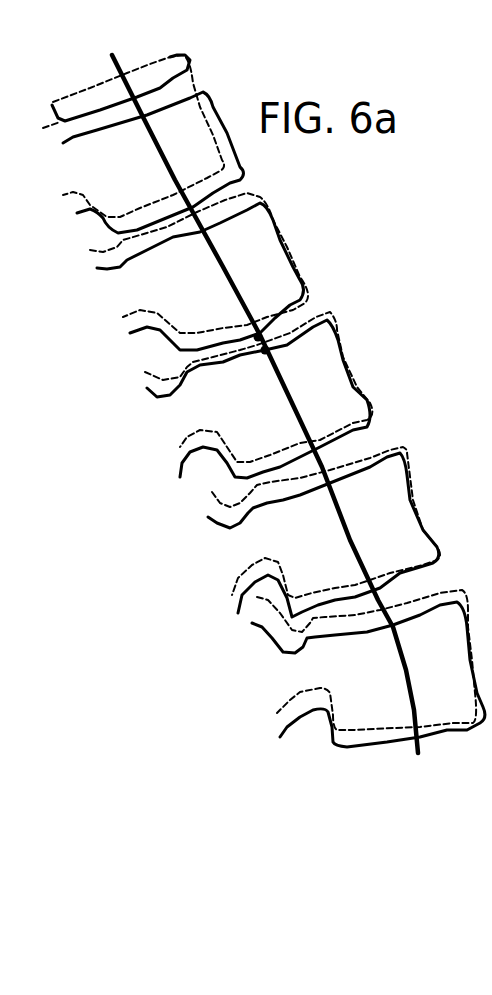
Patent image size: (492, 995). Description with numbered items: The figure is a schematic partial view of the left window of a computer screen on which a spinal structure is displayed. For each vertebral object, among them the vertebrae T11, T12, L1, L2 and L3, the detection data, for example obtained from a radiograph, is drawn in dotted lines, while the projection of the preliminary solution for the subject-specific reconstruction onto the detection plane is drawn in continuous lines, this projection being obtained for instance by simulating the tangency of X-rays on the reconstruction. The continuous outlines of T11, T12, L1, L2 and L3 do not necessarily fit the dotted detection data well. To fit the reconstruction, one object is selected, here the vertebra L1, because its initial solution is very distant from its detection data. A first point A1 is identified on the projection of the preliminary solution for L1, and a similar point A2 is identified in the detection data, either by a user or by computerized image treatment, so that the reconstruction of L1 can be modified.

The vertebra T11 is at (148, 144).
The vertebra T12 is at (199, 271).
The vertebra L1 is at (258, 395).
The vertebra L2 is at (324, 532).
The vertebra L3 is at (368, 668).
The first point A1 is at (265, 350).
The similar point in the detection data A2 is at (258, 337).